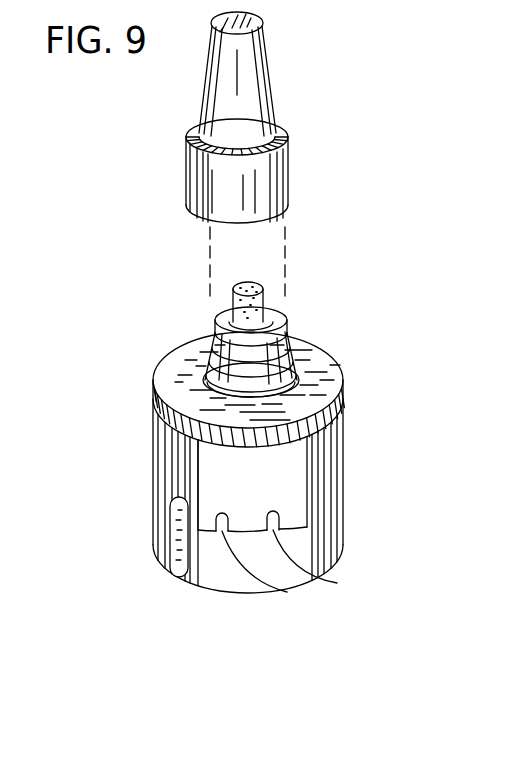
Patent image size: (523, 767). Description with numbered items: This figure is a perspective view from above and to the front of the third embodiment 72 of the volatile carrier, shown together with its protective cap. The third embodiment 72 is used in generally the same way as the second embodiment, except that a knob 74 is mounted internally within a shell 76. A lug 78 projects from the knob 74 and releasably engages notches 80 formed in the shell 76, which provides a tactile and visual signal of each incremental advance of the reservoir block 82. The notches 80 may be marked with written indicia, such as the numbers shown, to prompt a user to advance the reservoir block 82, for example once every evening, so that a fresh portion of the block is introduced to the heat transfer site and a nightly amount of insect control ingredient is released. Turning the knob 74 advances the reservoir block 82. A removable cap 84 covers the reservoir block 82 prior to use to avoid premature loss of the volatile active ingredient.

The third embodiment of the volatile carrier 72 is at (135, 356).
The knob 74 is at (347, 522).
The shell 76 is at (160, 448).
The lug 78 is at (178, 557).
The notches 80 is at (300, 596).
The reservoir block 82 is at (273, 302).
The removable cap 84 is at (275, 90).